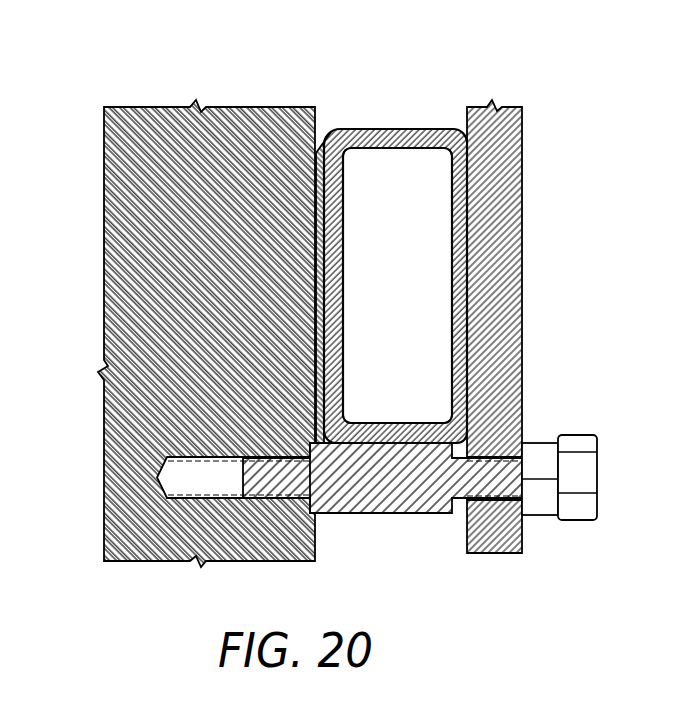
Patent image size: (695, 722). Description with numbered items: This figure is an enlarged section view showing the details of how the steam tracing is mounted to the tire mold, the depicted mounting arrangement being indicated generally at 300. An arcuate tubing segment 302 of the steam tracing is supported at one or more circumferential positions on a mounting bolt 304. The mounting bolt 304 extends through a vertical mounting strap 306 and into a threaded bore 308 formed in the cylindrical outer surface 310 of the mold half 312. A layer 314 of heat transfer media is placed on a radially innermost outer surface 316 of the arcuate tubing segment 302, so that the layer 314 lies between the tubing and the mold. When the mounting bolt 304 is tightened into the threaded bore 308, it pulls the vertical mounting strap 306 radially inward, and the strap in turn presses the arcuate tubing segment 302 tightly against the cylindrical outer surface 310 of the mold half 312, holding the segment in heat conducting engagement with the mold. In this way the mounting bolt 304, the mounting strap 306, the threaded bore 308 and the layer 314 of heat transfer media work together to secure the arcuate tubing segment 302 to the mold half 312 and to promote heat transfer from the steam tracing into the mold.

The bolted joint assembly 300 is at (553, 66).
The arcuate tubing segment 302 is at (400, 128).
The mounting bolt 304 is at (465, 452).
The vertical mounting strap 306 is at (510, 272).
The threaded bore 308 is at (202, 478).
The cylindrical outer surface 310 is at (316, 115).
The mold half 312 is at (160, 107).
The layer of heat transfer media 314 is at (318, 295).
The radially innermost outer surface 316 is at (327, 315).